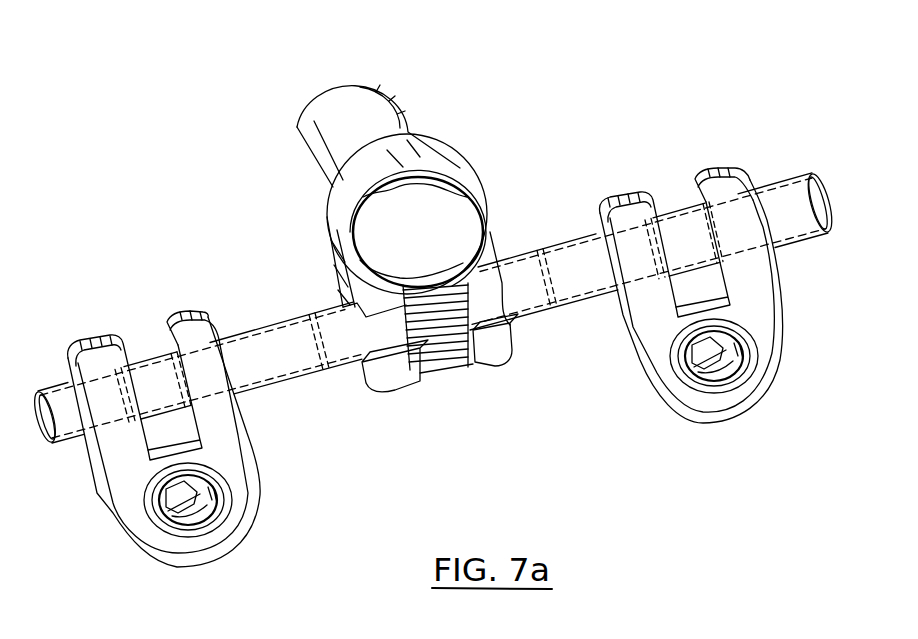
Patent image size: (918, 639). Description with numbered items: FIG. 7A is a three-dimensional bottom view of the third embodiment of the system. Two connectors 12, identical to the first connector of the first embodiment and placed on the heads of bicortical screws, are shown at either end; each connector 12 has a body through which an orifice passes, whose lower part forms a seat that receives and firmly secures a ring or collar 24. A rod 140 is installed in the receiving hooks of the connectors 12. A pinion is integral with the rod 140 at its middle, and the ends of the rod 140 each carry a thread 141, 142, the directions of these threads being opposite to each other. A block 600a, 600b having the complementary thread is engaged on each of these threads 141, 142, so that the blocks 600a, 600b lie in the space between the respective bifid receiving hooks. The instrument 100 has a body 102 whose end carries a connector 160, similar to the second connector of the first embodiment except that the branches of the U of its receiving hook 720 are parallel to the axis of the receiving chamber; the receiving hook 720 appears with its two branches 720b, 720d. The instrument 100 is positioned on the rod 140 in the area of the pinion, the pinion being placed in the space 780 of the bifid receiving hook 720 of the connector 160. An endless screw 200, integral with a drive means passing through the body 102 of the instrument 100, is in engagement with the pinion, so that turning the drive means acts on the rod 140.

The instrument 100 is at (305, 70).
The body of instrument 102 is at (423, 157).
The endless screw 200 is at (448, 212).
The first connector 12 is at (507, 262).
The ring or collar 24 is at (189, 520).
The rod 140 is at (327, 307).
The connector 160 is at (327, 250).
The thread 141 is at (50, 378).
The thread 142 is at (789, 170).
The block 600a is at (142, 347).
The block 600b is at (680, 185).
The receiving hook 720 is at (463, 404).
The base block 720b is at (514, 366).
The base block 720d is at (396, 388).
The space 780 is at (447, 385).